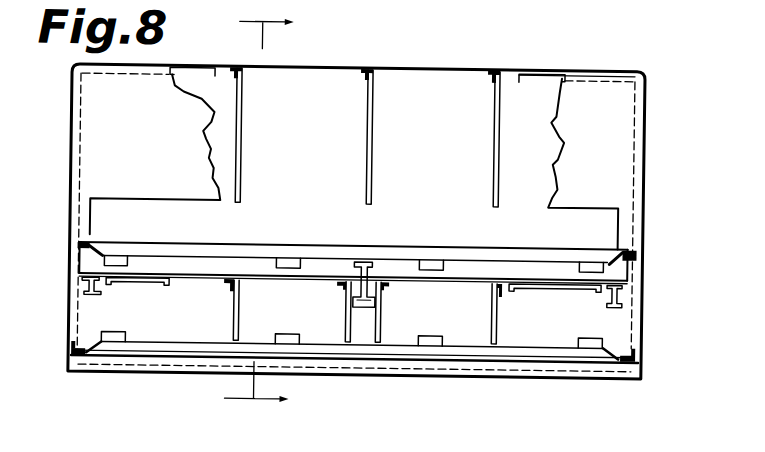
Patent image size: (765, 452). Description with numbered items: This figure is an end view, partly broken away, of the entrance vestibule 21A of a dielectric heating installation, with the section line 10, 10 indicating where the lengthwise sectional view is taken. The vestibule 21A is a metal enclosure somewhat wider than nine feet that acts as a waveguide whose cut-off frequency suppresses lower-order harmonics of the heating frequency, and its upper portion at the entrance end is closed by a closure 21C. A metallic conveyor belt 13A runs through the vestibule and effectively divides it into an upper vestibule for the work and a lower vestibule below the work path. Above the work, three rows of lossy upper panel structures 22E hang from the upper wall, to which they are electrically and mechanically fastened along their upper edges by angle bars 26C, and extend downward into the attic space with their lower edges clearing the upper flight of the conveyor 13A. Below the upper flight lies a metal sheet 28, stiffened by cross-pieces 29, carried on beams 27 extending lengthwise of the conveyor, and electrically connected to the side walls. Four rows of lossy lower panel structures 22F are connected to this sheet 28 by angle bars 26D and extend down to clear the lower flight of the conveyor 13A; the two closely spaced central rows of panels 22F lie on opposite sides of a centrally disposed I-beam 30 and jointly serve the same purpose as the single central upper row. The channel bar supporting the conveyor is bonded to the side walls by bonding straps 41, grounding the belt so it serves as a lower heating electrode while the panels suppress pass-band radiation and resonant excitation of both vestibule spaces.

The section line 10- 10 is at (273, 212).
The conveyor belt 13A is at (418, 252).
The entrance vestibule 21A is at (702, 169).
The closure 21C is at (608, 110).
The upper panel structures 22E is at (365, 145).
The lower panel structures 22F is at (347, 325).
The angle bars 26C is at (362, 72).
The angle bars 26D is at (230, 291).
The beams 27 is at (102, 296).
The metal sheet 28 is at (188, 279).
The cross-pieces 29 is at (147, 287).
The I-beam 30 is at (360, 262).
The bonding straps 41 is at (72, 248).